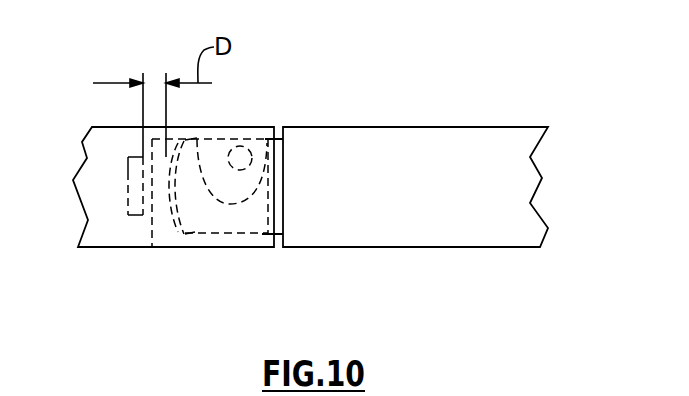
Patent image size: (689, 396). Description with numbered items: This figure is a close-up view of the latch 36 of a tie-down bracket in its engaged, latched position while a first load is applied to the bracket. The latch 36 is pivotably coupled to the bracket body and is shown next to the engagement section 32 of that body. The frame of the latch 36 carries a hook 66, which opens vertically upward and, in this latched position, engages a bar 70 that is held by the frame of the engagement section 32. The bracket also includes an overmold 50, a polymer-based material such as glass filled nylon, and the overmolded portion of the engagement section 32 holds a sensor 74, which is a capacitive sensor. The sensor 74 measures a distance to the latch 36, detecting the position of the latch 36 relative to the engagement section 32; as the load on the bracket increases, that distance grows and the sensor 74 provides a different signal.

The engagement section 32 is at (108, 126).
The latch 36 is at (468, 127).
The overmold 50 is at (428, 247).
The hook 66 is at (182, 232).
The bar 70 is at (254, 162).
The sensor 74 is at (128, 212).